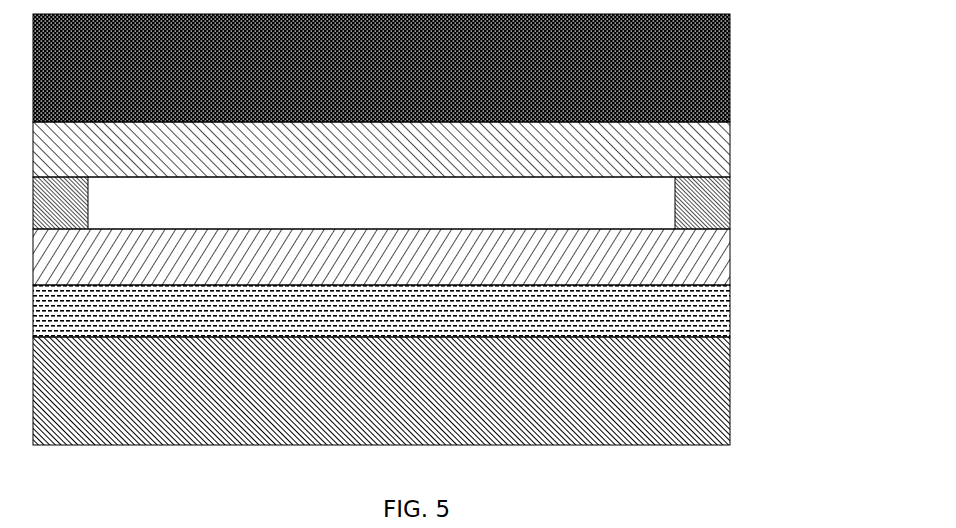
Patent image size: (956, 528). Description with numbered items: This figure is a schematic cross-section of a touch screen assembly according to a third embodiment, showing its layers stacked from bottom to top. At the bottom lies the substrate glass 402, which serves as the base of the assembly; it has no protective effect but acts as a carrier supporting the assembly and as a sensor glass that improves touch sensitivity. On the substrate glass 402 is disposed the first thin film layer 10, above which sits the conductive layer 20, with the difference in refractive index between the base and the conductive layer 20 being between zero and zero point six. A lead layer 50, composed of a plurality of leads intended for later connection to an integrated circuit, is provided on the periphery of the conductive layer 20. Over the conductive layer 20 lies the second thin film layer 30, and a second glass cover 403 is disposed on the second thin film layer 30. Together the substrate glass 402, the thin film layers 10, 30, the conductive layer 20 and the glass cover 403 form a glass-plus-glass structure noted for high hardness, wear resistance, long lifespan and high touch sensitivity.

The second glass cover 403 is at (680, 53).
The lead layer 50 is at (710, 141).
The second thin film layer 30 is at (710, 203).
The conductive layer 20 is at (677, 257).
The first thin film layer 10 is at (677, 312).
The substrate glass 402 is at (673, 393).